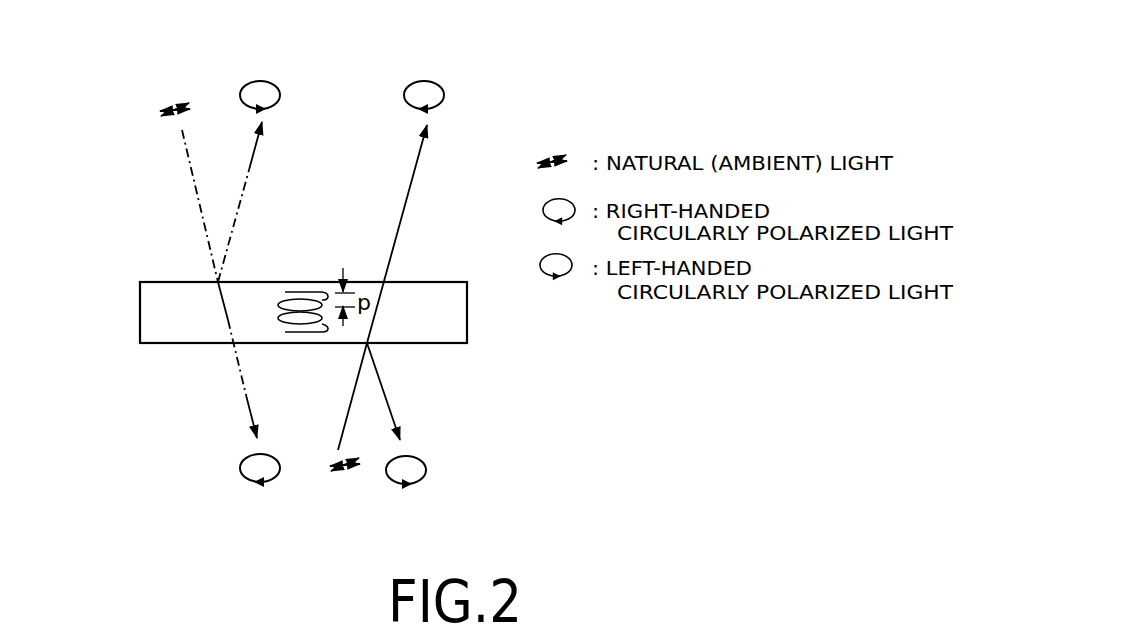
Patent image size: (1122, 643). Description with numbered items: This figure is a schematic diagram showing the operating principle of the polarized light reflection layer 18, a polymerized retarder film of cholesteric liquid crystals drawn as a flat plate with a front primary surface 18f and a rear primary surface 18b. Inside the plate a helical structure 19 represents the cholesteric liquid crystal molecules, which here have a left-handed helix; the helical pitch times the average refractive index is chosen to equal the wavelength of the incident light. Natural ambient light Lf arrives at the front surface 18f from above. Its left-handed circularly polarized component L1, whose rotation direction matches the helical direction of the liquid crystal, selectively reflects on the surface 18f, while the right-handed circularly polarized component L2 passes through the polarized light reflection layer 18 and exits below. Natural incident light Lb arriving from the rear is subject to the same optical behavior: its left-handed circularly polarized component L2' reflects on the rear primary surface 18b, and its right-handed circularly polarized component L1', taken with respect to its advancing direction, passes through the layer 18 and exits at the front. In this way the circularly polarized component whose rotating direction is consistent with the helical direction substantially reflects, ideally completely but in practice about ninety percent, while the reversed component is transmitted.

The polarized light reflection layer 18 is at (465, 307).
The primary surface 18f is at (163, 282).
The primary surface 18b is at (163, 343).
The helical structure of cholesteric liquid crystal 19 is at (297, 292).
The natural (ambient) light Lf is at (189, 167).
The left-handed circularly polarized component L1 is at (253, 181).
The right-handed circularly polarized component L2 is at (239, 384).
The natural incident light Lb is at (350, 408).
The right-handed circularly polarized component L1' is at (419, 212).
The left-handed circularly polarized component L2' is at (411, 416).